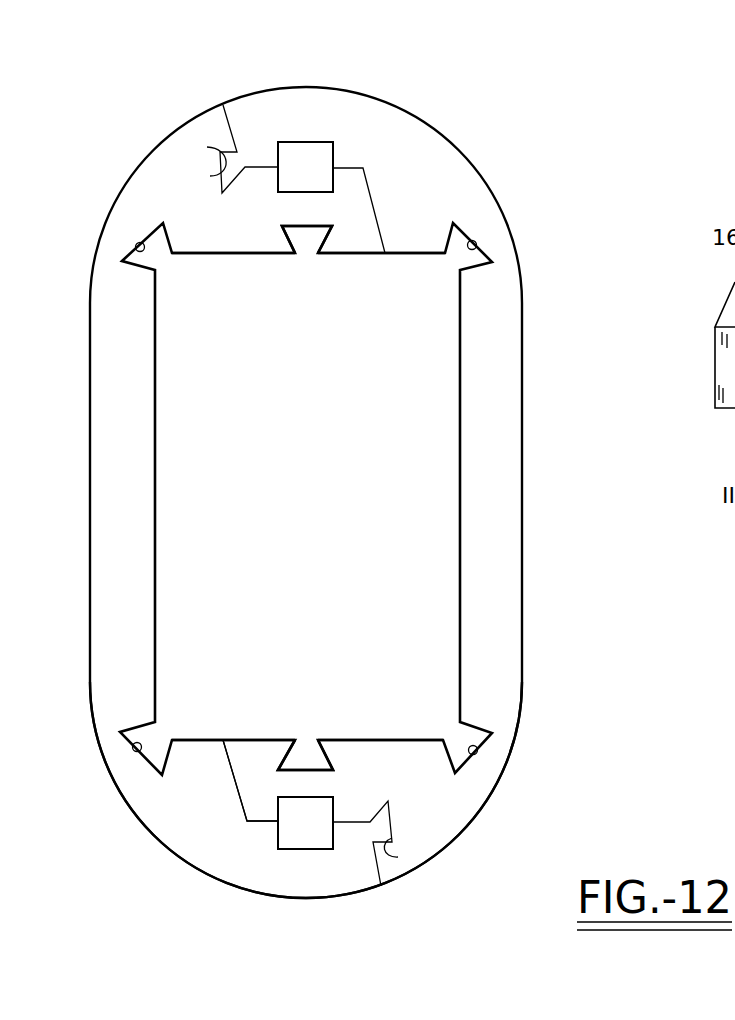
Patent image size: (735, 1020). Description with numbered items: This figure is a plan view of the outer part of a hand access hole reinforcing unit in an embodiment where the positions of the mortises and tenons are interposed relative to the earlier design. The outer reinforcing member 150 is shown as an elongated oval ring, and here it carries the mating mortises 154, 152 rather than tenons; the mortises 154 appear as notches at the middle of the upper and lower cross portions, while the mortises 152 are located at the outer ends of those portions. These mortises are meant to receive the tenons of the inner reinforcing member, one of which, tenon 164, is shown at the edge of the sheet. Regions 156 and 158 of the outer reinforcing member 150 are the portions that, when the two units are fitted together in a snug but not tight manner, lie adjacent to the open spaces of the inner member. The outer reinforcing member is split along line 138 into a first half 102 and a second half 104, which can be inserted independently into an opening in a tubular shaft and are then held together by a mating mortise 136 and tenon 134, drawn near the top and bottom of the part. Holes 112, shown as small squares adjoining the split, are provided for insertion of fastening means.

The first half 102 is at (438, 808).
The second half 104 is at (140, 798).
The holes 112 is at (307, 153).
The tenon 134 is at (220, 150).
The mating mortise 136 is at (207, 147).
The split 138 is at (237, 800).
The outer reinforcing member 150 is at (447, 136).
The mating mortise 152 is at (136, 246).
The mating mortise 154 is at (306, 228).
The region 156 is at (252, 255).
The region 158 is at (155, 420).
The tenon 164 is at (717, 305).